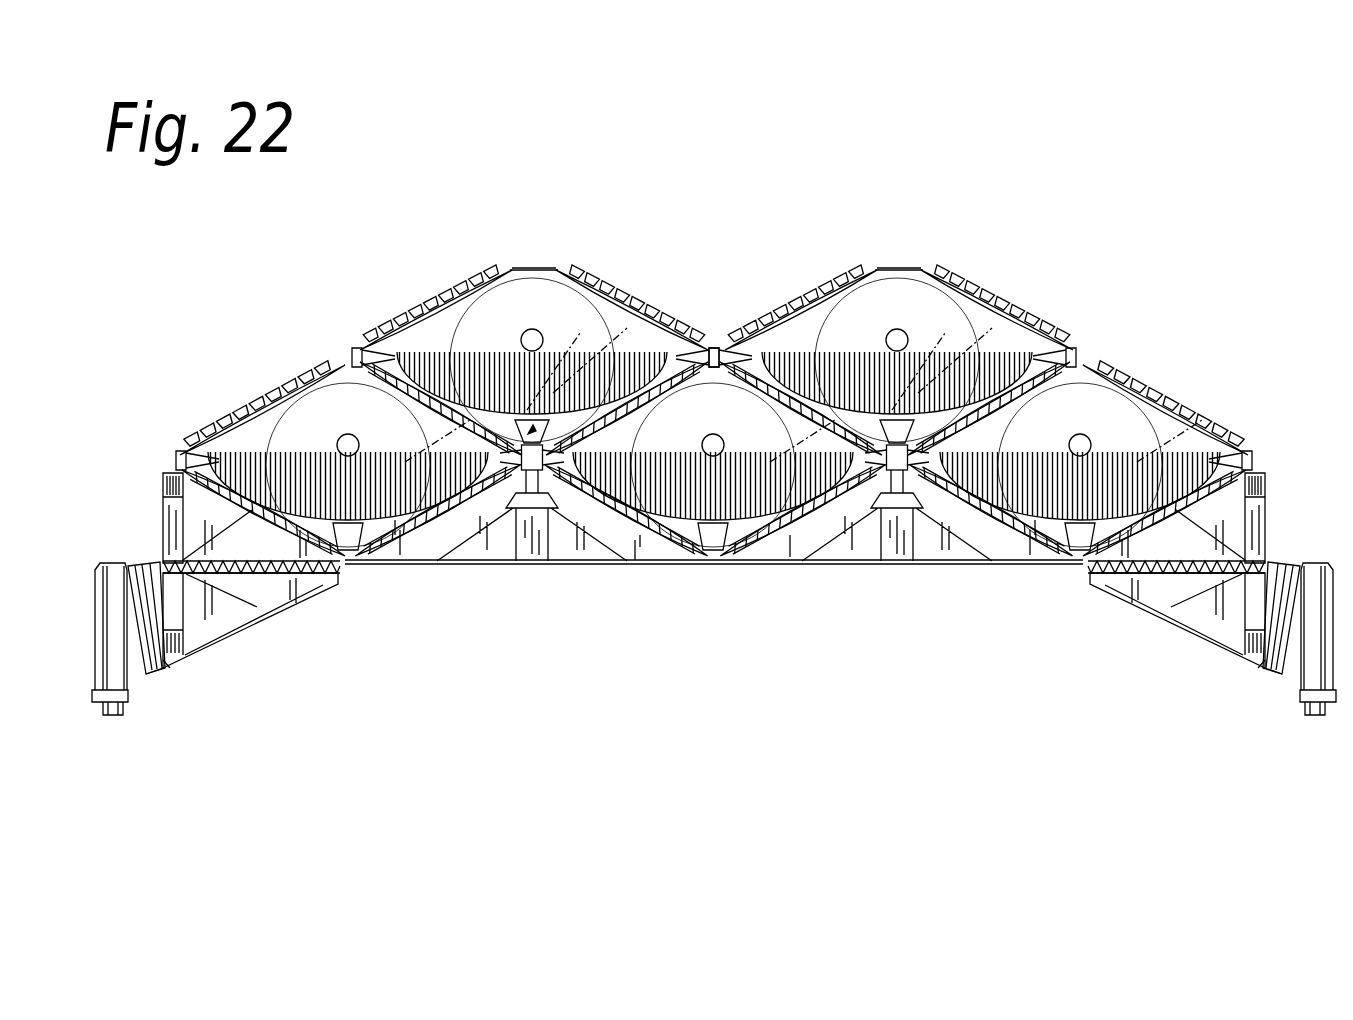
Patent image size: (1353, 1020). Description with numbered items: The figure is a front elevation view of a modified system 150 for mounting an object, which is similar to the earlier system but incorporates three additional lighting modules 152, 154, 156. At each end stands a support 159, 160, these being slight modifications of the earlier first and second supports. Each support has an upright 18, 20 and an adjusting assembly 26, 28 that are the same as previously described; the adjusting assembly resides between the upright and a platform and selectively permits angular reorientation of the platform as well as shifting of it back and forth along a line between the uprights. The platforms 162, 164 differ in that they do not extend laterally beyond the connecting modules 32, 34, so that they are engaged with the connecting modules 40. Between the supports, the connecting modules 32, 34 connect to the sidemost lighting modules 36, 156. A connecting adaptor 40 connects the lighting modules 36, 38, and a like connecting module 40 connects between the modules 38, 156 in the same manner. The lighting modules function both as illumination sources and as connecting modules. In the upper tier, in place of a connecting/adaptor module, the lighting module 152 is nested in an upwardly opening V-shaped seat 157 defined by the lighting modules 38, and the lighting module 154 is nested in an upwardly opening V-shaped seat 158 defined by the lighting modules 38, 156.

The upright 18 is at (1318, 706).
The upright 20 is at (128, 683).
The adjusting assembly 26 is at (1293, 554).
The adjusting assembly 28 is at (137, 560).
The connecting module 32 is at (1257, 470).
The connecting module 34 is at (165, 474).
The lighting module 36 is at (1137, 430).
The lighting module 38 is at (697, 525).
The connecting adaptor module 40 is at (528, 567).
The system for mounting an object 150 is at (688, 236).
The lighting module 152 is at (935, 302).
The lighting module 154 is at (548, 355).
The lighting module 156 is at (345, 440).
The V-shaped seat 157 is at (838, 410).
The V-shaped seat 158 is at (575, 350).
The support 159 is at (1271, 674).
The support 160 is at (163, 676).
The platform 162 is at (1210, 603).
The platform 164 is at (215, 610).